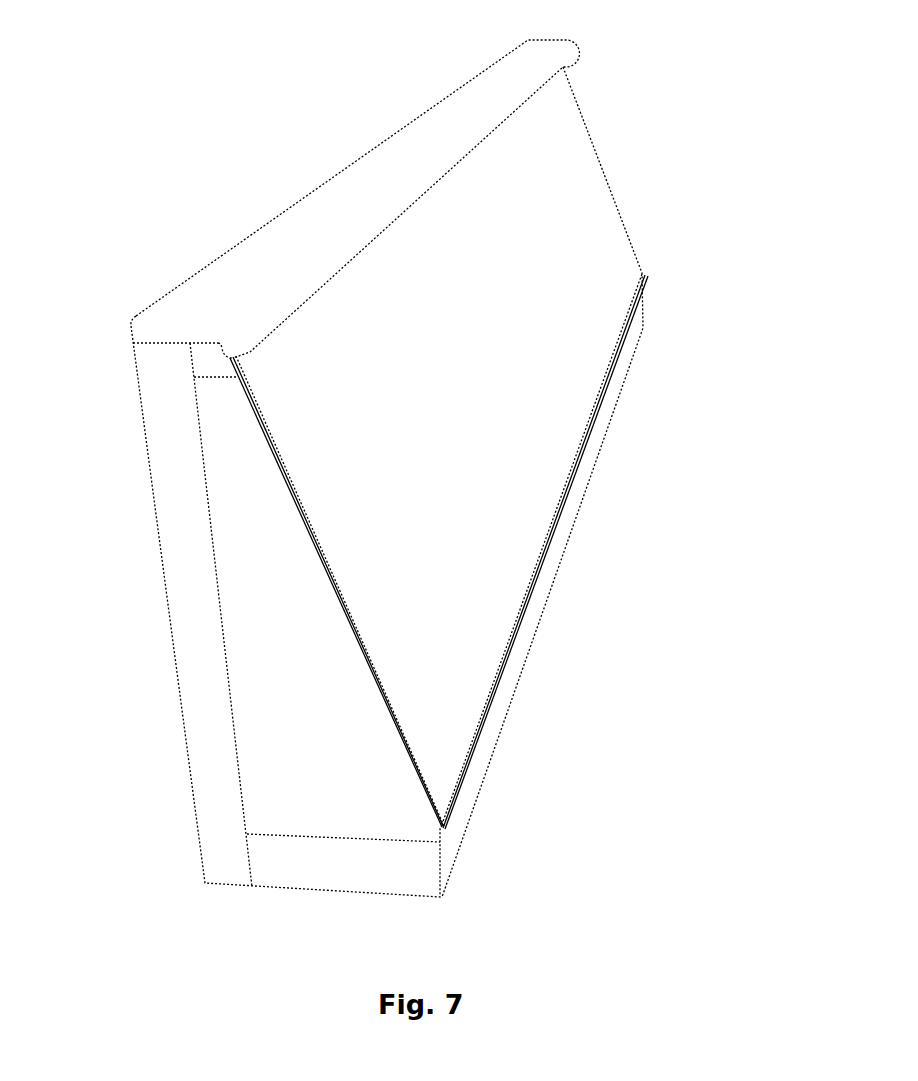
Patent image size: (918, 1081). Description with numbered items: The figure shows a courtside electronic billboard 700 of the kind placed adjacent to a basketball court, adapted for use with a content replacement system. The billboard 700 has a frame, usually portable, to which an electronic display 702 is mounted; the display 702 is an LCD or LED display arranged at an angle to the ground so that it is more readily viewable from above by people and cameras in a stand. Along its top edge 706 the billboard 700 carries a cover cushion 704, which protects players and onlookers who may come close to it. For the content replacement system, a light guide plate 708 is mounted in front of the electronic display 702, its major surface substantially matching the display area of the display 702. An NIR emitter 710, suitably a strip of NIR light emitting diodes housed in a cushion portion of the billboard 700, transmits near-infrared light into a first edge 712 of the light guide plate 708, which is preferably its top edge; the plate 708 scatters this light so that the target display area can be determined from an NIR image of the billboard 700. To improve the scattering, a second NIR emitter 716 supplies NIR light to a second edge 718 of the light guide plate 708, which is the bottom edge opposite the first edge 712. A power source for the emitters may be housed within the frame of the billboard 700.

The courtside electronic billboard 700 is at (203, 872).
The electronic display 702 is at (315, 638).
The cover cushion 704 is at (238, 268).
The top edge 706 is at (172, 343).
The light guide plate 708 is at (585, 143).
The NIR emitter 710 is at (227, 358).
The first edge 712 is at (237, 360).
The second NIR emitter 716 is at (445, 828).
The second edge 718 is at (492, 700).